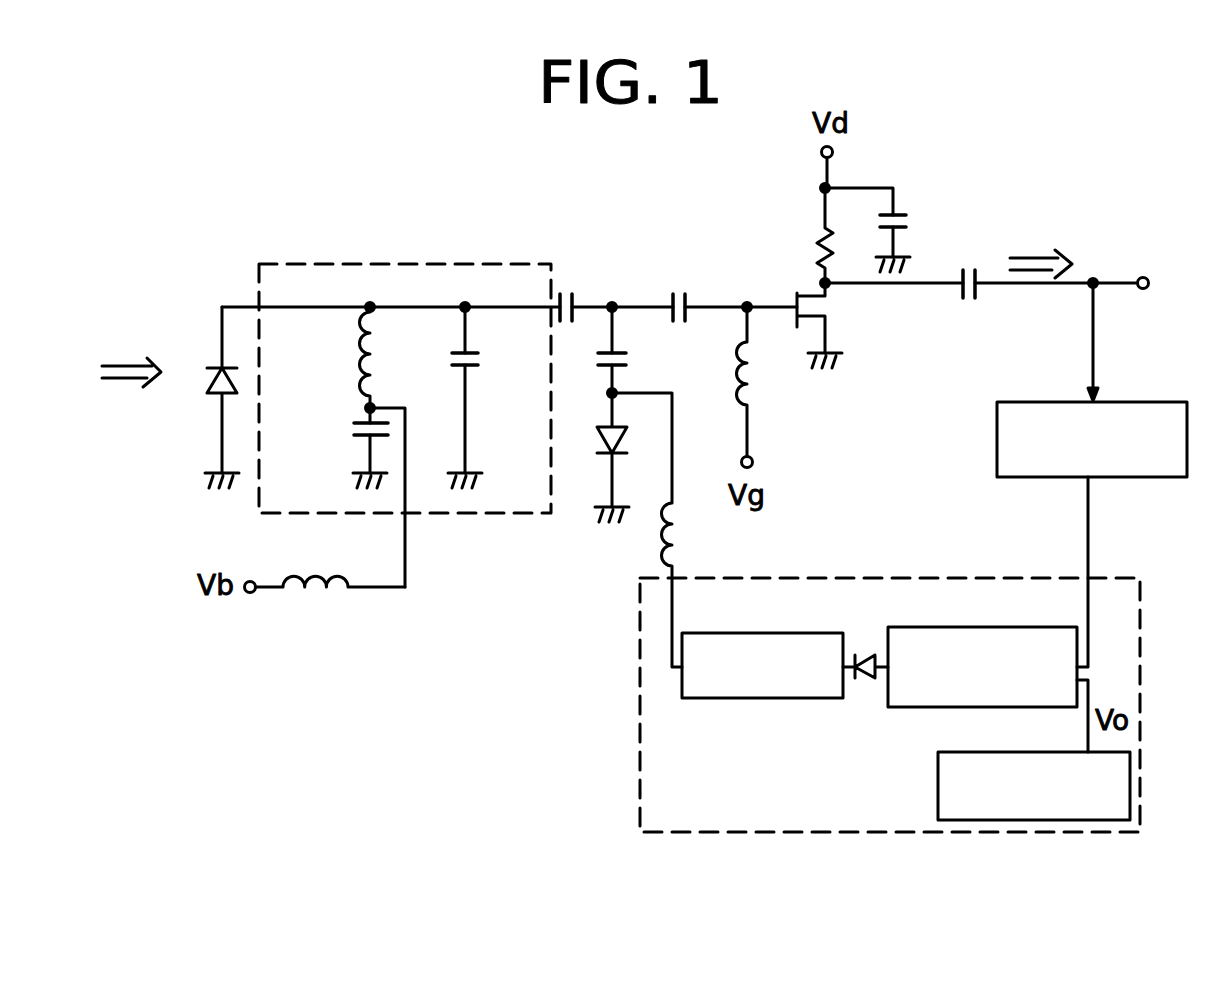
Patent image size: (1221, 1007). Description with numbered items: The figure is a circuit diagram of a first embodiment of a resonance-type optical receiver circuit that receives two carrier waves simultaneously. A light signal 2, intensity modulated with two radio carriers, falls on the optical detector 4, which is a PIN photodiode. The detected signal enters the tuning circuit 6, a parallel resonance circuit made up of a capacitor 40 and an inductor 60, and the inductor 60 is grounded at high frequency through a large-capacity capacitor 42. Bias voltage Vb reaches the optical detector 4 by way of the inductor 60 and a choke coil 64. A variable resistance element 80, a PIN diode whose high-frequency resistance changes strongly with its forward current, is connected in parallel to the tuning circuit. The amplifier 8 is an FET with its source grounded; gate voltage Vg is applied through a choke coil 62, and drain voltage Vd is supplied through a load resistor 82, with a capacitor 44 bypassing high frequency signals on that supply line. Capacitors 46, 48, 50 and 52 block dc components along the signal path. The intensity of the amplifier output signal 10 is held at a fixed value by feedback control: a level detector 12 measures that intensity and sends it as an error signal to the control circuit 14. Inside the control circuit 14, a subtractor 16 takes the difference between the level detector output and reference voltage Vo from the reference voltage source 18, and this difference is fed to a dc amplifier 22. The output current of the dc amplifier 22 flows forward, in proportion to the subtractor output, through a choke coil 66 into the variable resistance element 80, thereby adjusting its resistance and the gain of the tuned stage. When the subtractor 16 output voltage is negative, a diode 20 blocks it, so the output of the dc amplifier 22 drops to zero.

The light signal 2 is at (125, 362).
The optical detector 4 is at (203, 397).
The tuning circuit 6 is at (388, 262).
The amplifier 8 is at (796, 293).
The amplifier output signal 10 is at (1025, 256).
The level detector 12 is at (1030, 400).
The control circuit 14 is at (870, 577).
The subtractor 16 is at (907, 708).
The reference voltage source 18 is at (936, 800).
The diode 20 is at (860, 680).
The dc amplifier 22 is at (708, 699).
The capacitor 40 is at (455, 355).
The capacitor 42 is at (355, 435).
The capacitor 44 is at (910, 218).
The capacitor 46 is at (568, 292).
The capacitor 48 is at (632, 359).
The capacitor 50 is at (681, 291).
The capacitor 52 is at (968, 300).
The inductor 60 is at (355, 347).
The choke coil 62 is at (758, 378).
The choke coil 64 is at (316, 592).
The choke coil 66 is at (680, 531).
The variable resistance element 80 is at (598, 443).
The load resistor 82 is at (812, 245).